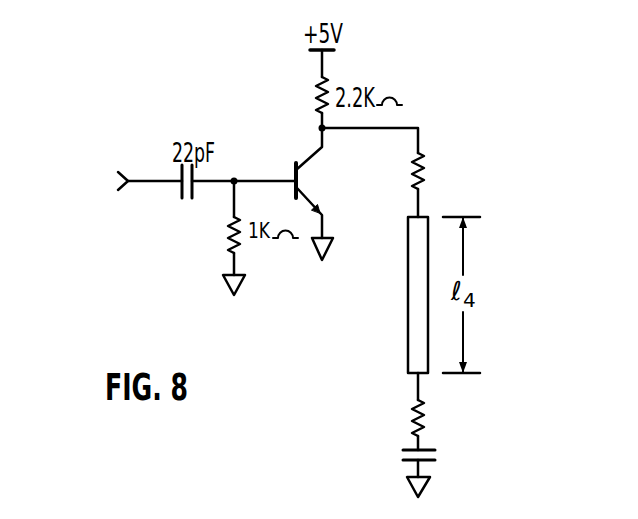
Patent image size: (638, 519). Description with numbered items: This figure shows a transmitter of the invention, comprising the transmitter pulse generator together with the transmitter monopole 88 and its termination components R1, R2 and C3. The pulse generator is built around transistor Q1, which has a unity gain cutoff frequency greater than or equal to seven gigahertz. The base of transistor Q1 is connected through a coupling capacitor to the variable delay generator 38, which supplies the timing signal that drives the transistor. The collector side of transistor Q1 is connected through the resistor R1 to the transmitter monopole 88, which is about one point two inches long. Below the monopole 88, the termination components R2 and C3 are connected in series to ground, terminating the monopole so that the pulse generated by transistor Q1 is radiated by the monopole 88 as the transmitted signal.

The variable delay generator 38 is at (98, 182).
The transmitter monopole 88 is at (413, 292).
The transistor Q1 is at (303, 182).
The termination component R1 is at (565, 180).
The termination component R2 is at (565, 422).
The termination component C3 is at (438, 458).